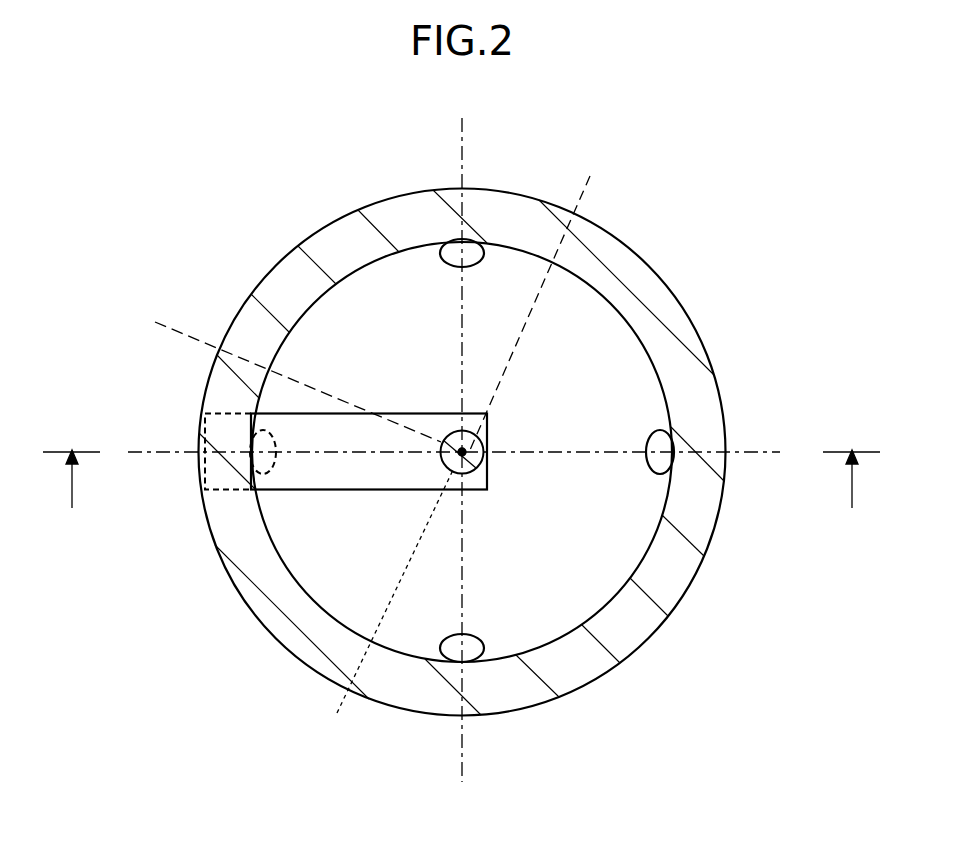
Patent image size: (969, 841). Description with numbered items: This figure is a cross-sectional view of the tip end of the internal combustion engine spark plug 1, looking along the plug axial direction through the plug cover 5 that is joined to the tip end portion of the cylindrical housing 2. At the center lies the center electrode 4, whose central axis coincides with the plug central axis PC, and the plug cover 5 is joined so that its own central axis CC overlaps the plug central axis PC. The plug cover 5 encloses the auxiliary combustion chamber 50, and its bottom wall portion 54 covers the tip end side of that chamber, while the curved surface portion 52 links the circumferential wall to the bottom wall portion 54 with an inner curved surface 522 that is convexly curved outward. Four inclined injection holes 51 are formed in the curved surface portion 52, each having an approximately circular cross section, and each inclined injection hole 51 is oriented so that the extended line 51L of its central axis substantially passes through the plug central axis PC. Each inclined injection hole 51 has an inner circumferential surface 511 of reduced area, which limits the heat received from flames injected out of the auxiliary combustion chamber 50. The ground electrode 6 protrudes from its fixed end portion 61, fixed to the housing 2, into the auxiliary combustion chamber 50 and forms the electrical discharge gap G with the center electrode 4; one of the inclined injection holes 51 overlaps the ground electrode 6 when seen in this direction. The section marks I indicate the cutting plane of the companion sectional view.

The internal combustion engine spark plug 1 is at (468, 443).
The housing 2 is at (316, 262).
The center electrode 4 is at (468, 465).
The plug cover 5 is at (480, 394).
The auxiliary combustion chamber 50 is at (352, 353).
The inclined injection hole 51 is at (467, 257).
The inner circumferential surface 511 is at (455, 252).
The extended line of the central axis of the inclined injection hole 51L is at (140, 530).
The curved surface portion 52 is at (650, 502).
The inner curved surface 522 is at (647, 378).
The bottom wall portion 54 is at (542, 502).
The ground electrode 6 is at (360, 468).
The fixed end portion 61 is at (207, 437).
The plug central axis PC is at (542, 300).
The central axis of the plug cover CC is at (278, 370).
The electrical discharge gap G is at (386, 608).
The section line I- I is at (461, 479).